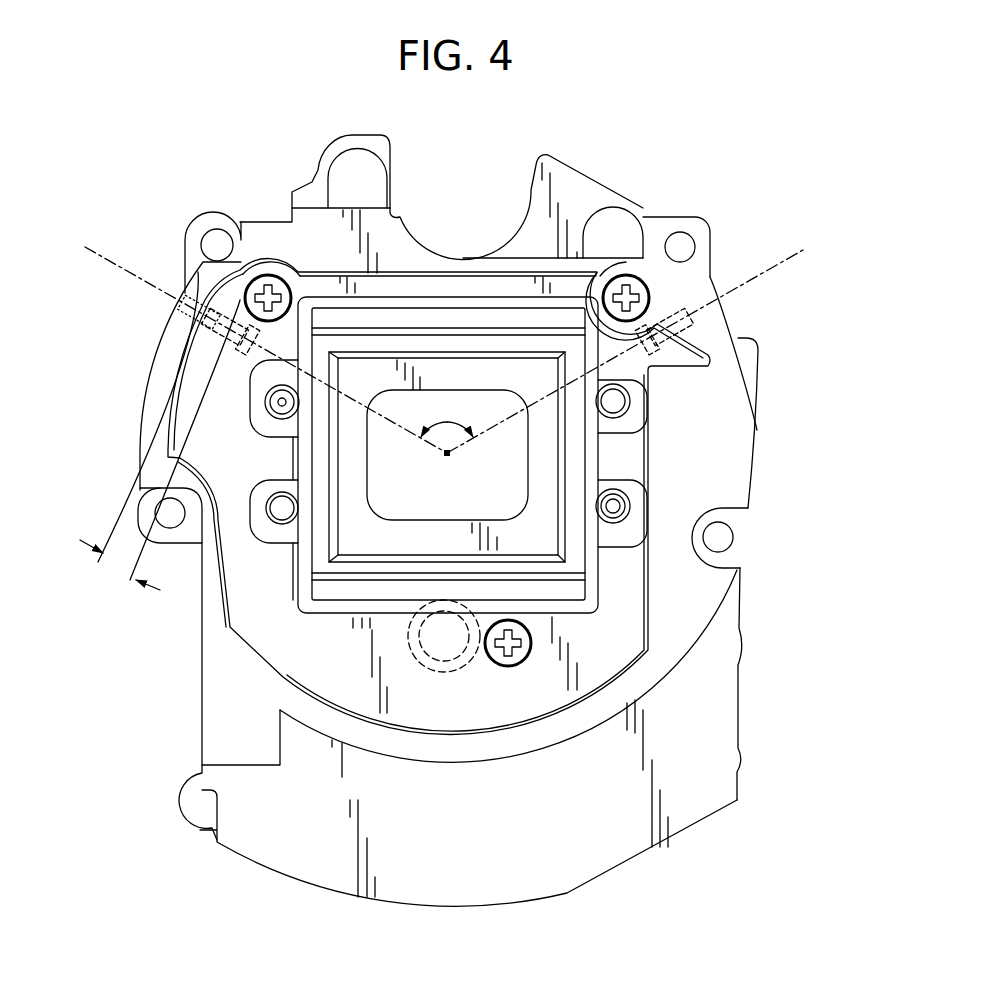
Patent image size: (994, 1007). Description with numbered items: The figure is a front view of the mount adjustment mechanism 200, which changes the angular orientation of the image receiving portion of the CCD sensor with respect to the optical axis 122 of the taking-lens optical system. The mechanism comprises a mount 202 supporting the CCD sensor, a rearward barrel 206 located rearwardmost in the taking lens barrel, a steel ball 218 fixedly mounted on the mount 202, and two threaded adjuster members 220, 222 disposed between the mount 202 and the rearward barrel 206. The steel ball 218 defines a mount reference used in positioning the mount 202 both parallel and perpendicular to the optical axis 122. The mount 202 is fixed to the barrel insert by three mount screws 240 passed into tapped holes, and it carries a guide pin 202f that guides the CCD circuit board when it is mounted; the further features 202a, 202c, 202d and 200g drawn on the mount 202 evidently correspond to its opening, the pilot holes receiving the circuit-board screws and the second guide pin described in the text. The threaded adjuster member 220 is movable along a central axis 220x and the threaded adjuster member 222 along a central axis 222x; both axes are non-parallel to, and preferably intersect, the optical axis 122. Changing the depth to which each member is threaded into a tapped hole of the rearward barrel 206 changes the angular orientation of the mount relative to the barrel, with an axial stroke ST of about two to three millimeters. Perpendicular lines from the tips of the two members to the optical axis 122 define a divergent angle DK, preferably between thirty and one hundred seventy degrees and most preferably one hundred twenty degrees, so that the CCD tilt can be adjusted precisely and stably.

The mount adjustment mechanism 200 is at (594, 136).
The mount 202 is at (297, 648).
The opening of holding plate 202a is at (455, 519).
The hole 202c is at (643, 402).
The hole 202d is at (267, 523).
The guide pin 202f is at (630, 503).
The hole 200g is at (266, 402).
The rearward barrel 206 is at (693, 723).
The steel ball 218 is at (442, 640).
The threaded adjuster member 220 is at (205, 318).
The central axis 220x is at (105, 263).
The threaded adjuster member 222 is at (710, 353).
The central axis 222x is at (776, 284).
The mount screw 240 is at (268, 275).
The optical axis 122 is at (447, 460).
The divergent angle DK is at (447, 415).
The axial stroke ST is at (113, 567).